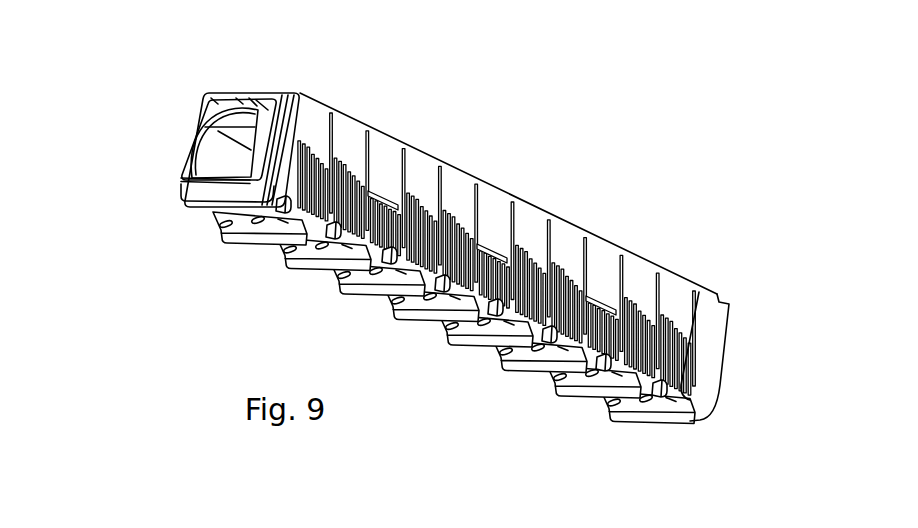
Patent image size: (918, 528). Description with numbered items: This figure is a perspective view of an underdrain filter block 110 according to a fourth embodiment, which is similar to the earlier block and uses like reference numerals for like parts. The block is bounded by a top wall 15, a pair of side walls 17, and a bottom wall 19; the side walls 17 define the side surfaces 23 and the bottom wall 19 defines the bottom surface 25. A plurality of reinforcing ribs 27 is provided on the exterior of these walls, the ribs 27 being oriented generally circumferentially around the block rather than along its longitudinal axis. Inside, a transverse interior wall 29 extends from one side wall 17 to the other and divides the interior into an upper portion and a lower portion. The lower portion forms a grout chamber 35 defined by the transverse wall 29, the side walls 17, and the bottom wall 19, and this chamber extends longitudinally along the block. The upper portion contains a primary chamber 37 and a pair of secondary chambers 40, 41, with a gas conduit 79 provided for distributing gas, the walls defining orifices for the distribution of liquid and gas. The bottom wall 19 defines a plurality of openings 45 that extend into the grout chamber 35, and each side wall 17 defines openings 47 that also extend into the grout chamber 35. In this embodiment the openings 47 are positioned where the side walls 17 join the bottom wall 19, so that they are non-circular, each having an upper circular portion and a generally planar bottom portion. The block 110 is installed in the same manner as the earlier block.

The underdrain filter block 110 is at (158, 115).
The top wall 15 is at (507, 190).
The side walls 17 is at (603, 252).
The bottom wall 19 is at (253, 226).
The side surfaces 23 is at (347, 128).
The bottom surface 25 is at (257, 236).
The reinforcing ribs 27 is at (303, 263).
The transverse interior wall 29 is at (227, 192).
The grout chamber 35 is at (211, 196).
The primary chamber 37 is at (204, 163).
The secondary chamber 40 is at (206, 110).
The secondary chamber 41 is at (262, 108).
The openings 45 is at (280, 248).
The openings 47 is at (432, 318).
The gas conduit 79 is at (203, 140).